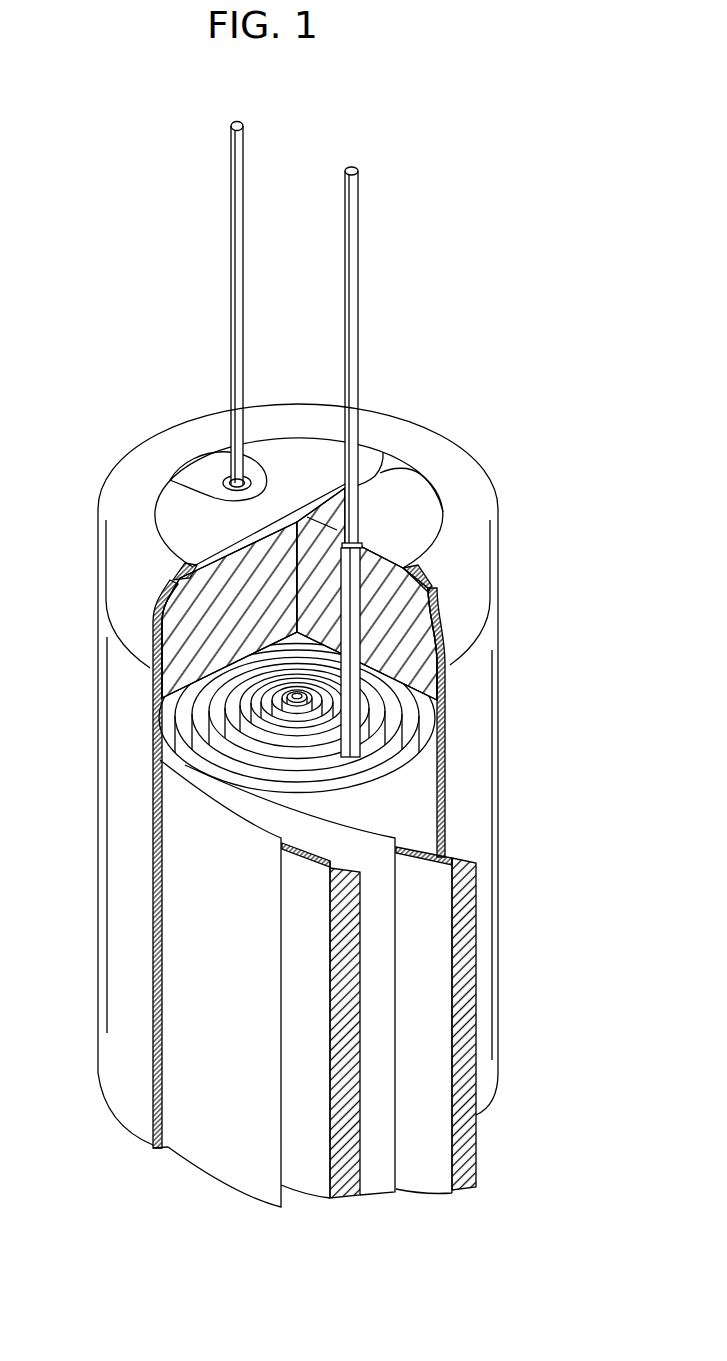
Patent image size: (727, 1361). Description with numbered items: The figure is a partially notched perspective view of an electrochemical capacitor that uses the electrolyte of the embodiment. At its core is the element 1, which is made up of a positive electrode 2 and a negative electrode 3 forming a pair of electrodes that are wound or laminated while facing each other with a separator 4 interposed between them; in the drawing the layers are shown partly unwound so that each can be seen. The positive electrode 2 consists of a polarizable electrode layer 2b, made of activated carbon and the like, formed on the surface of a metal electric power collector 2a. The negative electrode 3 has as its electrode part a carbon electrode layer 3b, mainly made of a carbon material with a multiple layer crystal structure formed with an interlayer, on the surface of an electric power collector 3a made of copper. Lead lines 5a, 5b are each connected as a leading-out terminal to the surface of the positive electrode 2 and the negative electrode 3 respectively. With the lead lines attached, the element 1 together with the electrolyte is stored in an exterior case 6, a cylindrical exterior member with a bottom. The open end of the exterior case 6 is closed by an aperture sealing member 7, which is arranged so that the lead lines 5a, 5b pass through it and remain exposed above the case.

The element 1 is at (237, 740).
The positive electrode 2 is at (504, 1020).
The electric power collector 2a is at (467, 902).
The polarizable electrode layer 2b is at (437, 946).
The negative electrode 3 is at (446, 1020).
The electric power collector 3a is at (352, 1002).
The carbon electrode layer 3b is at (312, 1040).
The separator 4 is at (383, 1178).
The lead line 5a is at (230, 250).
The lead line 5b is at (358, 330).
The exterior case 6 is at (488, 655).
The aperture sealing member 7 is at (418, 667).